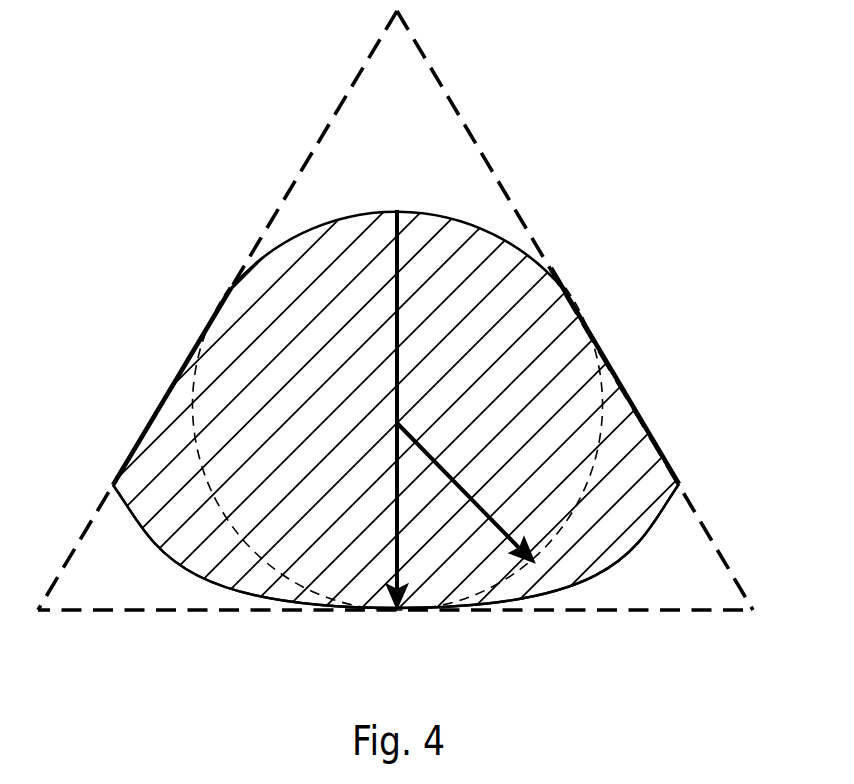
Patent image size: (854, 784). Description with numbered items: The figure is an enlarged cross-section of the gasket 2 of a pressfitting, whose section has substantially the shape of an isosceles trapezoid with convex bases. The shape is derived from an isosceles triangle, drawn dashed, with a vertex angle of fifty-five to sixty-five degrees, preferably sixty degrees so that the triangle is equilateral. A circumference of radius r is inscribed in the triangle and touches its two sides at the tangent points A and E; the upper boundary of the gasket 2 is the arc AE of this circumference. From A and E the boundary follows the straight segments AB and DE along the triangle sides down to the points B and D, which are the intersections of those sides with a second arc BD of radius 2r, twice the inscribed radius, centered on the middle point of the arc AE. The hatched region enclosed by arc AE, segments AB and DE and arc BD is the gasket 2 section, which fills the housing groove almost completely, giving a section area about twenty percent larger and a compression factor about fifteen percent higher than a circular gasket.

The gasket 2 is at (468, 310).
The radius of the inscribed circumference r is at (462, 480).
The radius of the arc BD 2r is at (393, 284).
The tangent point A is at (615, 376).
The intersection point B is at (558, 520).
The intersection point D is at (238, 522).
The tangent point E is at (172, 380).